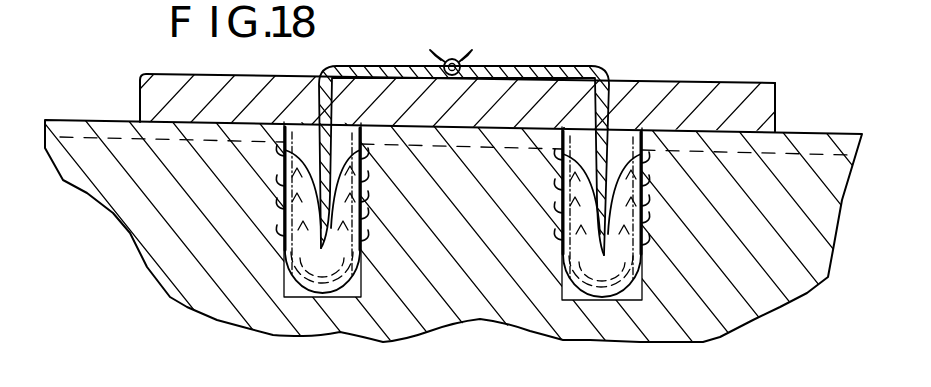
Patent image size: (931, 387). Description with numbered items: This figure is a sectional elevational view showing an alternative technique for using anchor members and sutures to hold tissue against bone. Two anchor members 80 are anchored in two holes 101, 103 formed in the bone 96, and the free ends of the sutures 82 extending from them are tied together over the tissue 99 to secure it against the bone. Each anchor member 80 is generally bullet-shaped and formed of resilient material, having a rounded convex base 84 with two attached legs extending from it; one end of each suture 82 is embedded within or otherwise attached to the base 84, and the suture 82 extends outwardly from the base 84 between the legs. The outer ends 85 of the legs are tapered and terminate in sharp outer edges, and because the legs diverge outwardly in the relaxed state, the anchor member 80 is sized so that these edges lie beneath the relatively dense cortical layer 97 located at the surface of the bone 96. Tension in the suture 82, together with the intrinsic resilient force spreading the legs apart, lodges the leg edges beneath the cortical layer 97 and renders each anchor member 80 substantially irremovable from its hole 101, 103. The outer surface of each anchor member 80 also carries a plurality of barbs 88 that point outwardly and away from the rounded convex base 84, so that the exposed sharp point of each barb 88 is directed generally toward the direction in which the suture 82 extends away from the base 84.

The cortical layer 97 is at (67, 124).
The bone 96 is at (113, 121).
The tissue 99 is at (777, 97).
The suture 82 is at (377, 66).
The outer ends of the legs 85 is at (284, 138).
The barbs 88 is at (281, 196).
The anchor member 80 is at (362, 214).
The rounded convex base 84 is at (362, 284).
The hole 101 is at (287, 291).
The hole 103 is at (565, 300).